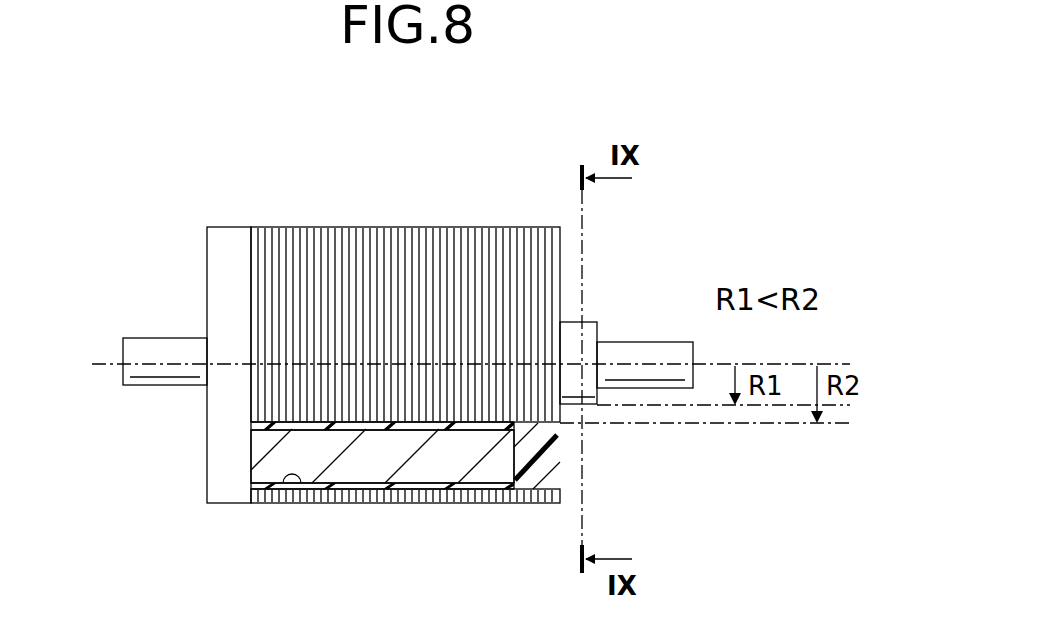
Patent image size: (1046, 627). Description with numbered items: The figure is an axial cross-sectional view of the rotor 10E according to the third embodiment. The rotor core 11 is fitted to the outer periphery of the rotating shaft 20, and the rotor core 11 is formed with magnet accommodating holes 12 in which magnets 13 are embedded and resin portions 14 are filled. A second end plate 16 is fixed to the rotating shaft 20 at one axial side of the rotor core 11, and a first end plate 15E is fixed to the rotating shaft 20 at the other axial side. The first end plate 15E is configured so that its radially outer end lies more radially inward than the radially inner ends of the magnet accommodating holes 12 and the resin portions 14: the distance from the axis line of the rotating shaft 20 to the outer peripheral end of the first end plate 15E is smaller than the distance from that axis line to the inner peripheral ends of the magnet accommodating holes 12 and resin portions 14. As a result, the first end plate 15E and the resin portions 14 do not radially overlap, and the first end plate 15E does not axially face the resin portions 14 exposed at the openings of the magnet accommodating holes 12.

The rotor 10E is at (454, 349).
The rotor core 11 is at (362, 228).
The magnet accommodating hole 12 is at (297, 490).
The magnet 13 is at (397, 467).
The resin portion 14 is at (532, 462).
The first end plate 15E is at (592, 332).
The second end plate 16 is at (231, 238).
The rotating shaft 20 is at (138, 318).